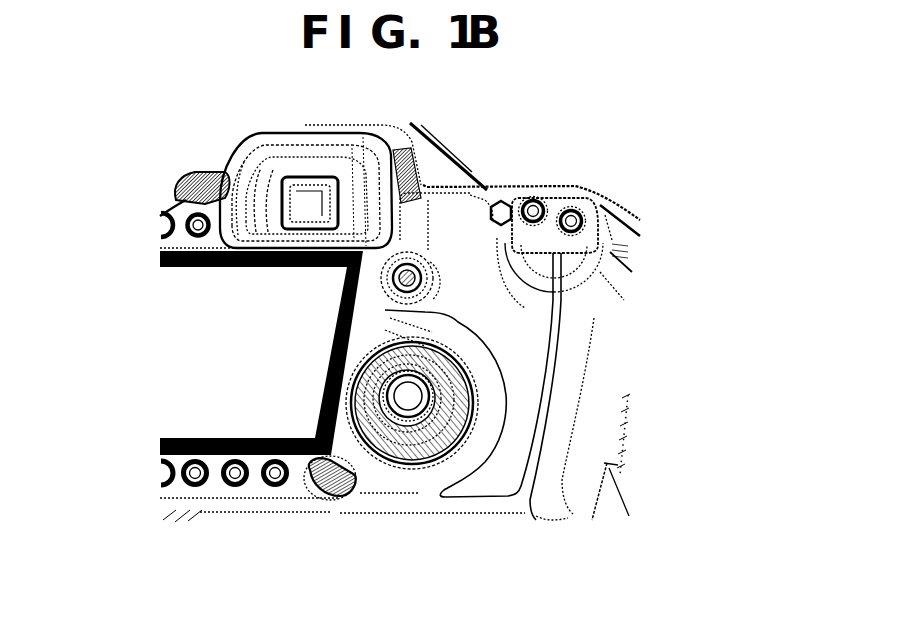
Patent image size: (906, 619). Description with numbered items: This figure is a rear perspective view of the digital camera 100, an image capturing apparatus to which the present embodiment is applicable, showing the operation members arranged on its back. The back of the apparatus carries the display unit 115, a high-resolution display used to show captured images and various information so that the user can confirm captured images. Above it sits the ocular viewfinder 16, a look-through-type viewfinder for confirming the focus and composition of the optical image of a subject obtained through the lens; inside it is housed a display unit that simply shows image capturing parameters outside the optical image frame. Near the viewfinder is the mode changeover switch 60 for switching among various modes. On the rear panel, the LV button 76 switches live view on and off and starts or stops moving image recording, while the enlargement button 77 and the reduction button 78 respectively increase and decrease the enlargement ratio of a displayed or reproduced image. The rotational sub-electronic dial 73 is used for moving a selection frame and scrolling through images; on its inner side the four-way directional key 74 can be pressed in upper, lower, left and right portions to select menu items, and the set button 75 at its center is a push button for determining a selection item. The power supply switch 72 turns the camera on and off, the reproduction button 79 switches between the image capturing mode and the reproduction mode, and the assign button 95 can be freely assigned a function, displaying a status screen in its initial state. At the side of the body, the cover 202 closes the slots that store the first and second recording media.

The digital camera 100 is at (676, 106).
The ocular viewfinder 16 is at (300, 215).
The mode changeover switch 60 is at (186, 172).
The display unit 115 is at (188, 353).
The LV button 76 is at (410, 272).
The enlargement button 77 is at (571, 216).
The reduction button 78 is at (533, 206).
The sub-electronic dial 73 is at (373, 447).
The four-way directional key 74 is at (390, 428).
The set button 75 is at (417, 393).
The power supply switch 72 is at (338, 498).
The reproduction button 79 is at (276, 478).
The assign button 95 is at (181, 484).
The cover 202 is at (600, 383).